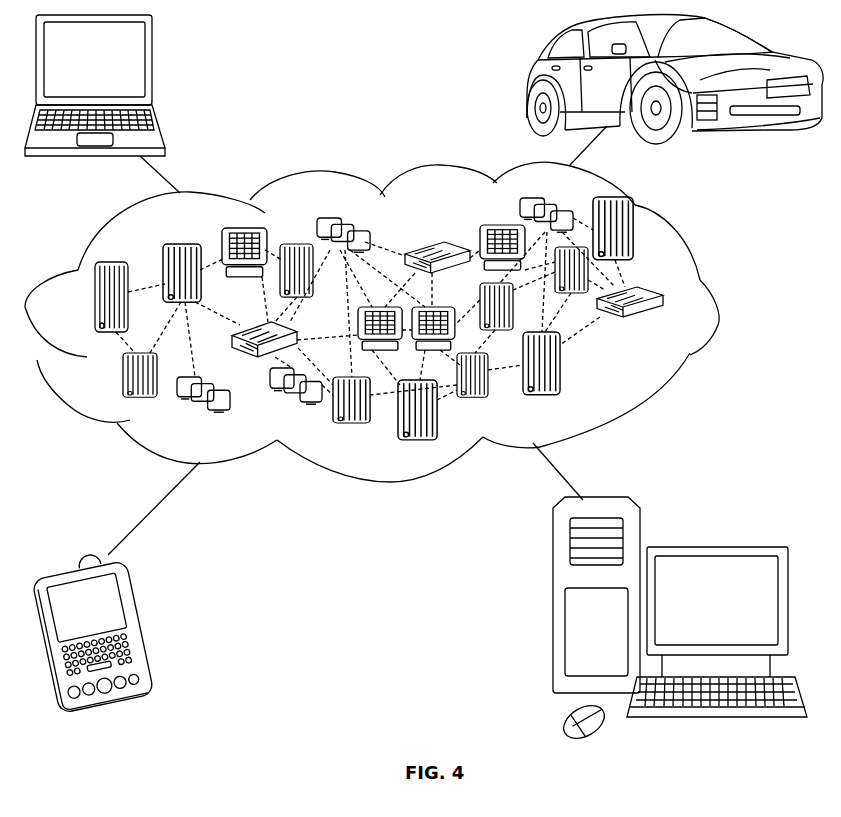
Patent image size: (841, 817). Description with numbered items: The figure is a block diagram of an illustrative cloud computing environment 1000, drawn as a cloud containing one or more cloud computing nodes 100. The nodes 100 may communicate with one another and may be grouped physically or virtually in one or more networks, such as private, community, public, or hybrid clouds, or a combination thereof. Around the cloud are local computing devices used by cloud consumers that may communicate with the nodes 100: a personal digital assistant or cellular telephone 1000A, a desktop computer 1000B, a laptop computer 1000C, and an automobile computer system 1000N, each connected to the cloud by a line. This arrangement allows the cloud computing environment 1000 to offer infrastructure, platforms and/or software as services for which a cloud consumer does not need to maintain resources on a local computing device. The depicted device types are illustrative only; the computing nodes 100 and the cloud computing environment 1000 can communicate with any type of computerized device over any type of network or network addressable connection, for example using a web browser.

The cloud computing environment 1000 is at (719, 300).
The cloud computing nodes 100 is at (668, 330).
The personal digital assistant (PDA) or cellular telephone 1000A is at (146, 627).
The desktop computer 1000B is at (713, 547).
The laptop computer 1000C is at (152, 68).
The automobile computer system 1000N is at (527, 80).